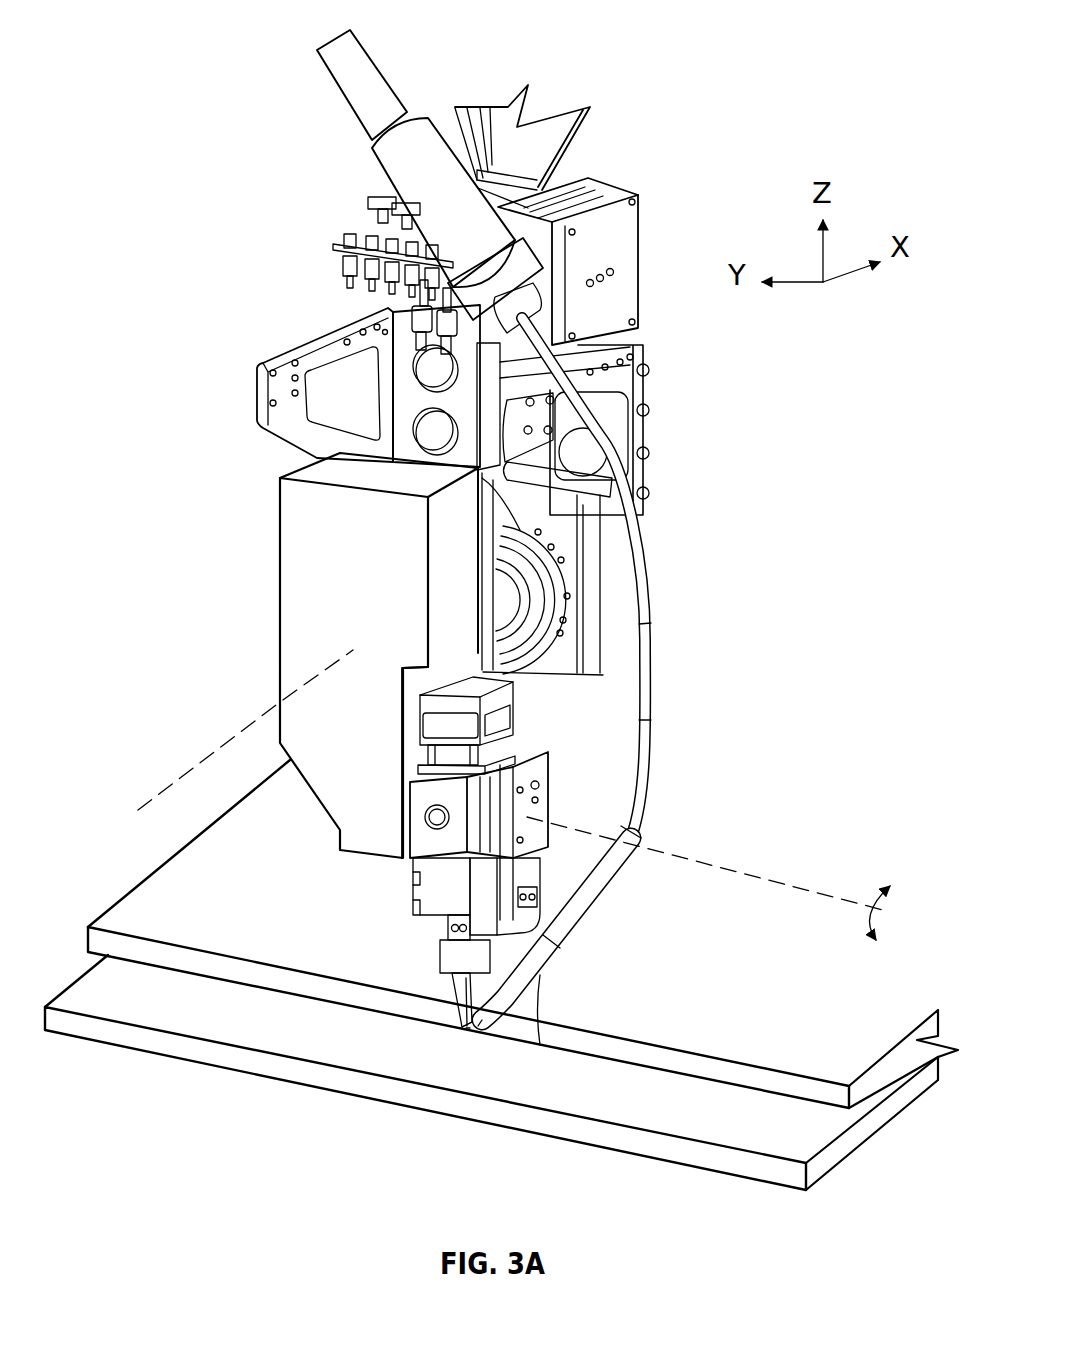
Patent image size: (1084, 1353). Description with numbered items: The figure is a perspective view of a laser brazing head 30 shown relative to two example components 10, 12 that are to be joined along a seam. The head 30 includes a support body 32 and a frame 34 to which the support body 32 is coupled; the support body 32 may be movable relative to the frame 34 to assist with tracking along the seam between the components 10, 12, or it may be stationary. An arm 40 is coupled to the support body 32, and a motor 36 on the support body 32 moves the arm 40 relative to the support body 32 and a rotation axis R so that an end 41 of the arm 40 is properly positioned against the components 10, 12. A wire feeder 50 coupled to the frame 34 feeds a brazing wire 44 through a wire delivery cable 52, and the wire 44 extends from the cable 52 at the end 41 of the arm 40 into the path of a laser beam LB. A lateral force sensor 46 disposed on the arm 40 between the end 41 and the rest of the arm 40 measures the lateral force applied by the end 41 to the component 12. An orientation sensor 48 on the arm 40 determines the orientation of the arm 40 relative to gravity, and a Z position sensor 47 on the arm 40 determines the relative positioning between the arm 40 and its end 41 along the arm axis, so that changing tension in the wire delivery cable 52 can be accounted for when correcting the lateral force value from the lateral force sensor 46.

The component 10 is at (78, 977).
The component 12 is at (123, 893).
The laser brazing head 30 is at (216, 286).
The support body 32 is at (278, 588).
The frame 34 is at (645, 432).
The motor 36 is at (400, 603).
The arm 40 is at (572, 810).
The end 41 is at (540, 1000).
The brazing wire 44 is at (468, 1030).
The lateral force sensor 46 is at (537, 929).
The Z position sensor 47 is at (543, 862).
The orientation sensor 48 is at (425, 817).
The wire feeder 50 is at (368, 60).
The wire delivery cable 52 is at (658, 665).
The laser beam LB is at (462, 990).
The rotation axis R is at (783, 883).